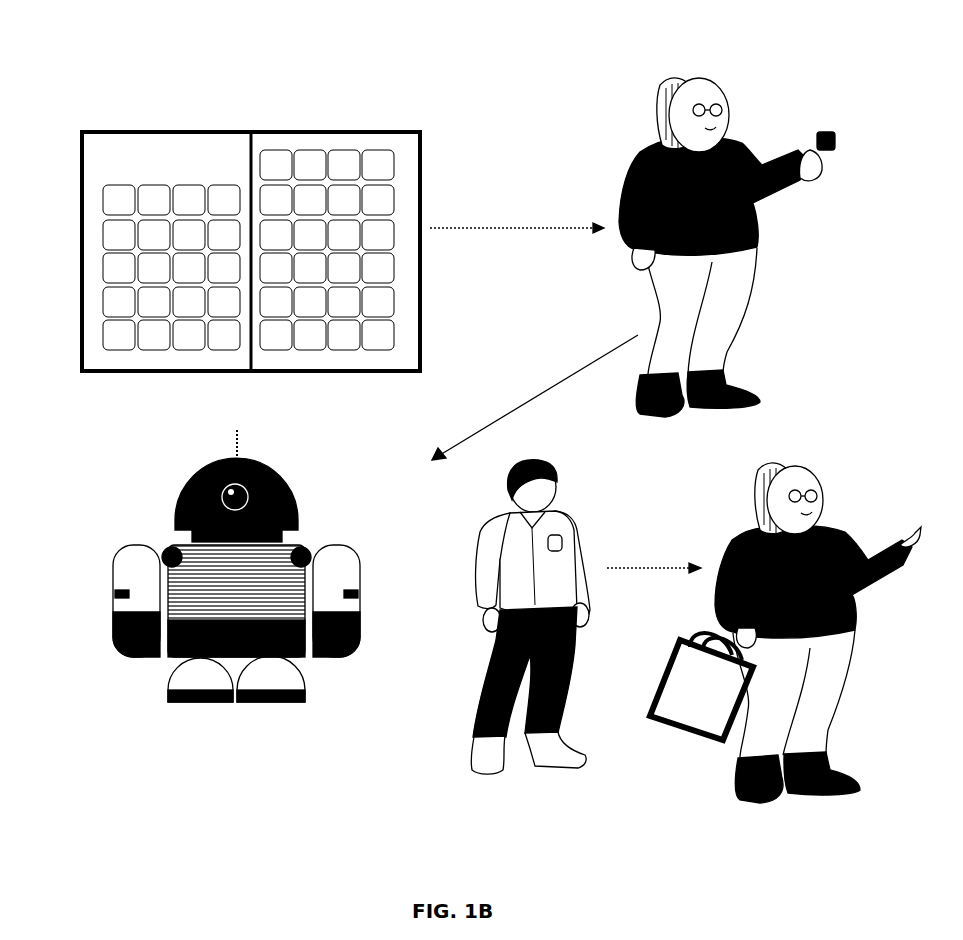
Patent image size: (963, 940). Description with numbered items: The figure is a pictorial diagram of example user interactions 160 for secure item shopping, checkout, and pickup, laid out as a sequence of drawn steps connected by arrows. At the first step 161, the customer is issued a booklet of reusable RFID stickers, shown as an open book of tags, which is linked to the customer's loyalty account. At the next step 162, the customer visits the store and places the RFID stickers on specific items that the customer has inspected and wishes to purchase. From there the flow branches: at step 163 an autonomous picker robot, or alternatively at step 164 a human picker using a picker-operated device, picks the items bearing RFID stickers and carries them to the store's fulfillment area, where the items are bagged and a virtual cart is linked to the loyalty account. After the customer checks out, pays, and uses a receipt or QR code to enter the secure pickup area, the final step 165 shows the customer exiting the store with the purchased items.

The user interactions 160 is at (302, 82).
The booklet of reusable RFID stickers 161 is at (80, 278).
The customer placing RFID stickers on items 162 is at (662, 110).
The autonomous picker robot picking step 163 is at (182, 489).
The picker with picker-operated device picking step 164 is at (485, 525).
The customer exiting store with purchased items 165 is at (753, 489).